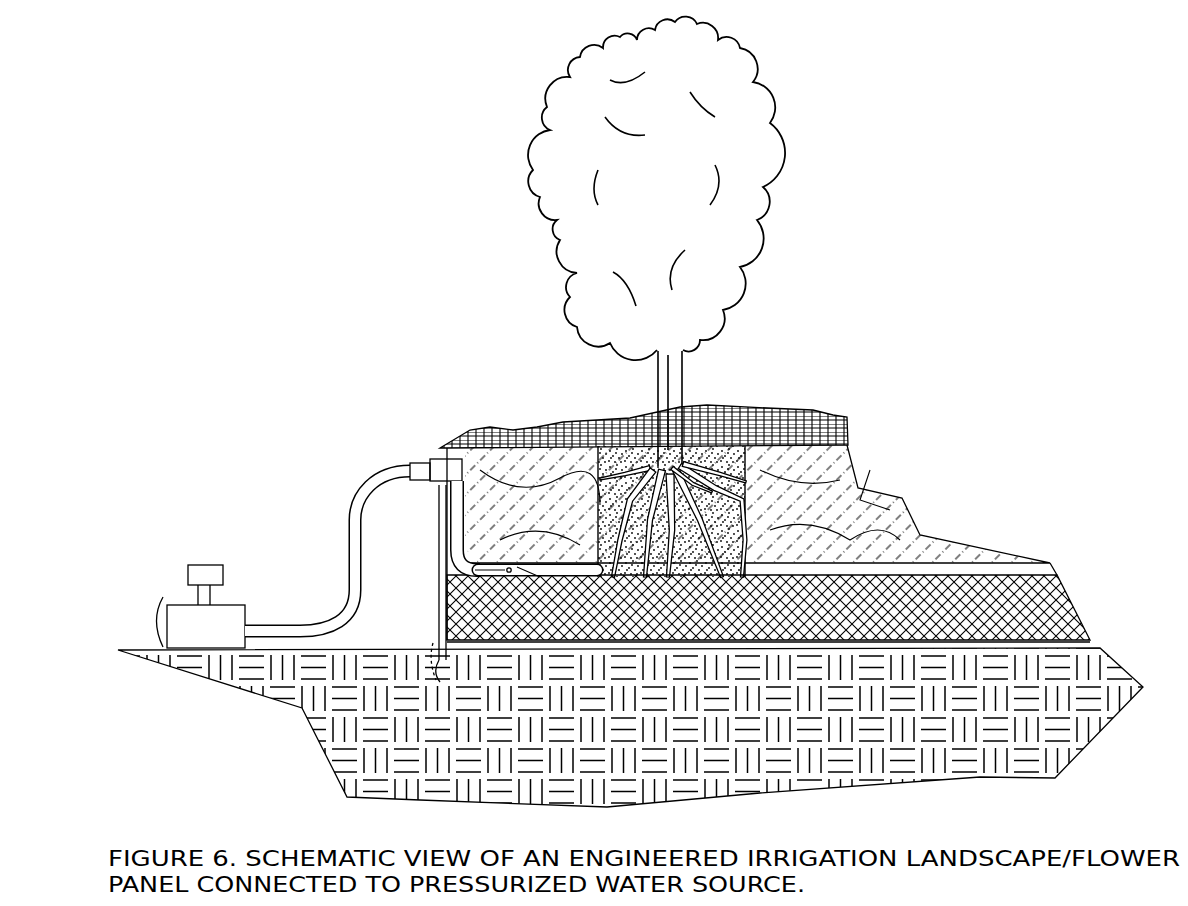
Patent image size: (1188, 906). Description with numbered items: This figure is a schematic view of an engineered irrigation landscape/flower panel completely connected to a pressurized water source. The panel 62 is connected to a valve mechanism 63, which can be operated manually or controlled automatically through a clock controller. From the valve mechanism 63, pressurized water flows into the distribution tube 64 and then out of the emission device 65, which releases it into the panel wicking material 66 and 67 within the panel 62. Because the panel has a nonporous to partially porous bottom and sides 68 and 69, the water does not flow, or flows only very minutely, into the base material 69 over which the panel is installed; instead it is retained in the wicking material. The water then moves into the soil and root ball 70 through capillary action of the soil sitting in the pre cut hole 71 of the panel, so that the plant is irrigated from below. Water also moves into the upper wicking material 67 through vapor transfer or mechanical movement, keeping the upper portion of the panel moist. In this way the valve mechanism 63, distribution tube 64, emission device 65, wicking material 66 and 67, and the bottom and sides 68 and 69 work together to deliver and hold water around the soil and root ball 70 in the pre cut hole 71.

The panel 62 is at (440, 448).
The valve mechanism 63 is at (207, 572).
The distribution tube 64 is at (360, 538).
The emission device 65 is at (447, 607).
The panel wicking material 66 is at (1077, 617).
The upper wicking material 67 is at (883, 518).
The nonporous to partially porous bottom 68 is at (813, 645).
The nonporous to partially porous sides 69 is at (450, 563).
The soil and root ball 70 is at (620, 447).
The pre cut hole 71 is at (740, 470).